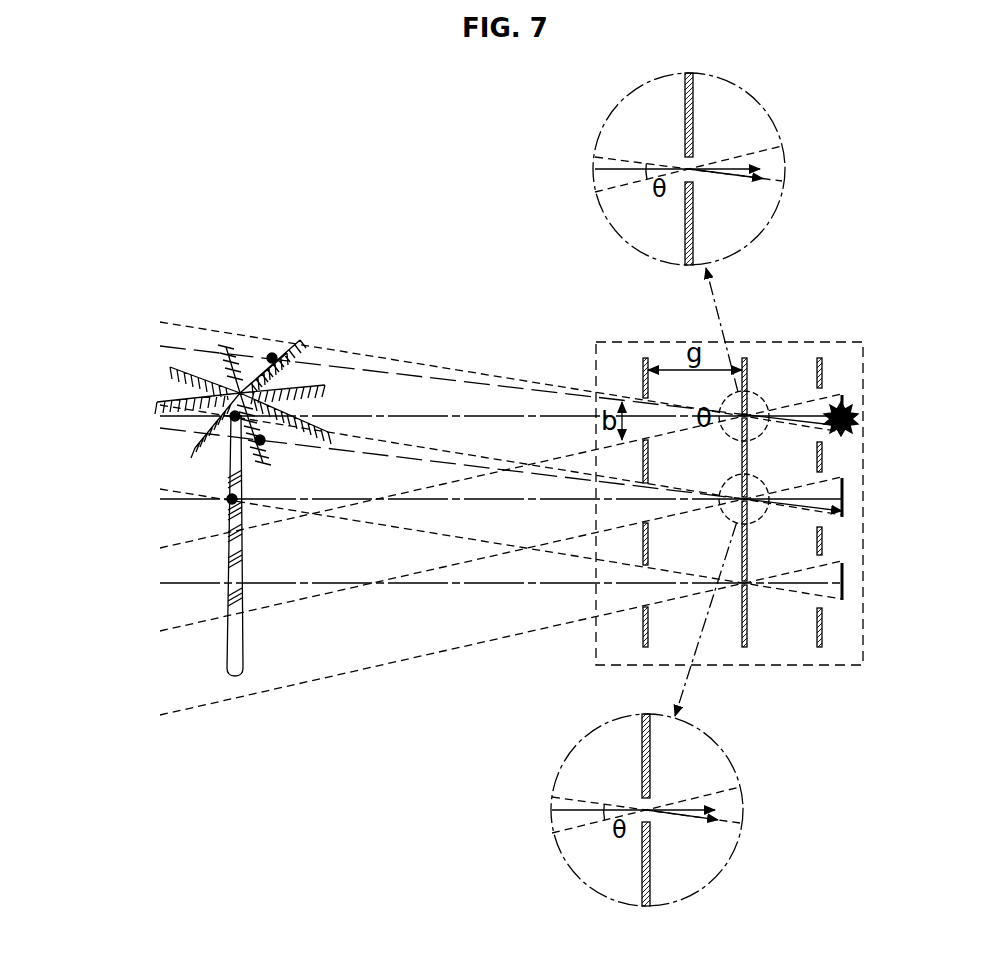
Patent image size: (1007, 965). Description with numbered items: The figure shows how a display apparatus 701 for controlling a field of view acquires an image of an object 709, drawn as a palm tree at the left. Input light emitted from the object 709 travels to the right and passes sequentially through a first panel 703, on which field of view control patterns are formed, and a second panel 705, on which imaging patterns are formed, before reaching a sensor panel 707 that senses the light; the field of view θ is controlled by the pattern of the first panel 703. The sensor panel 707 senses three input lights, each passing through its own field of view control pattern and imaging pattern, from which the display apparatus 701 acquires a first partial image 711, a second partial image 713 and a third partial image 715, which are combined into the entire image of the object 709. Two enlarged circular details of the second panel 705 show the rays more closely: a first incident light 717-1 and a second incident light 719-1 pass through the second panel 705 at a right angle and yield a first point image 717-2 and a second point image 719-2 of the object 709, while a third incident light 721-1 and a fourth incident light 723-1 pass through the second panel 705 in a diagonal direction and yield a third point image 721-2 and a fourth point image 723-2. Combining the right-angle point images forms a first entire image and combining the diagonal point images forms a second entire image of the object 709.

The display apparatus 701 is at (770, 667).
The first panel 703 is at (643, 358).
The second panel 705 is at (744, 358).
The sensor panel 707 is at (819, 358).
The object 709 is at (198, 372).
The first partial image 711 is at (858, 416).
The second partial image 713 is at (846, 498).
The third partial image 715 is at (846, 580).
The first incident light 717-1 is at (596, 169).
The first point image 717-2 is at (235, 416).
The second incident light 719-1 is at (553, 810).
The second point image 719-2 is at (232, 499).
The third incident light 721-1 is at (596, 157).
The third point image 721-2 is at (272, 358).
The fourth incident light 723-1 is at (553, 797).
The fourth point image 723-2 is at (260, 440).